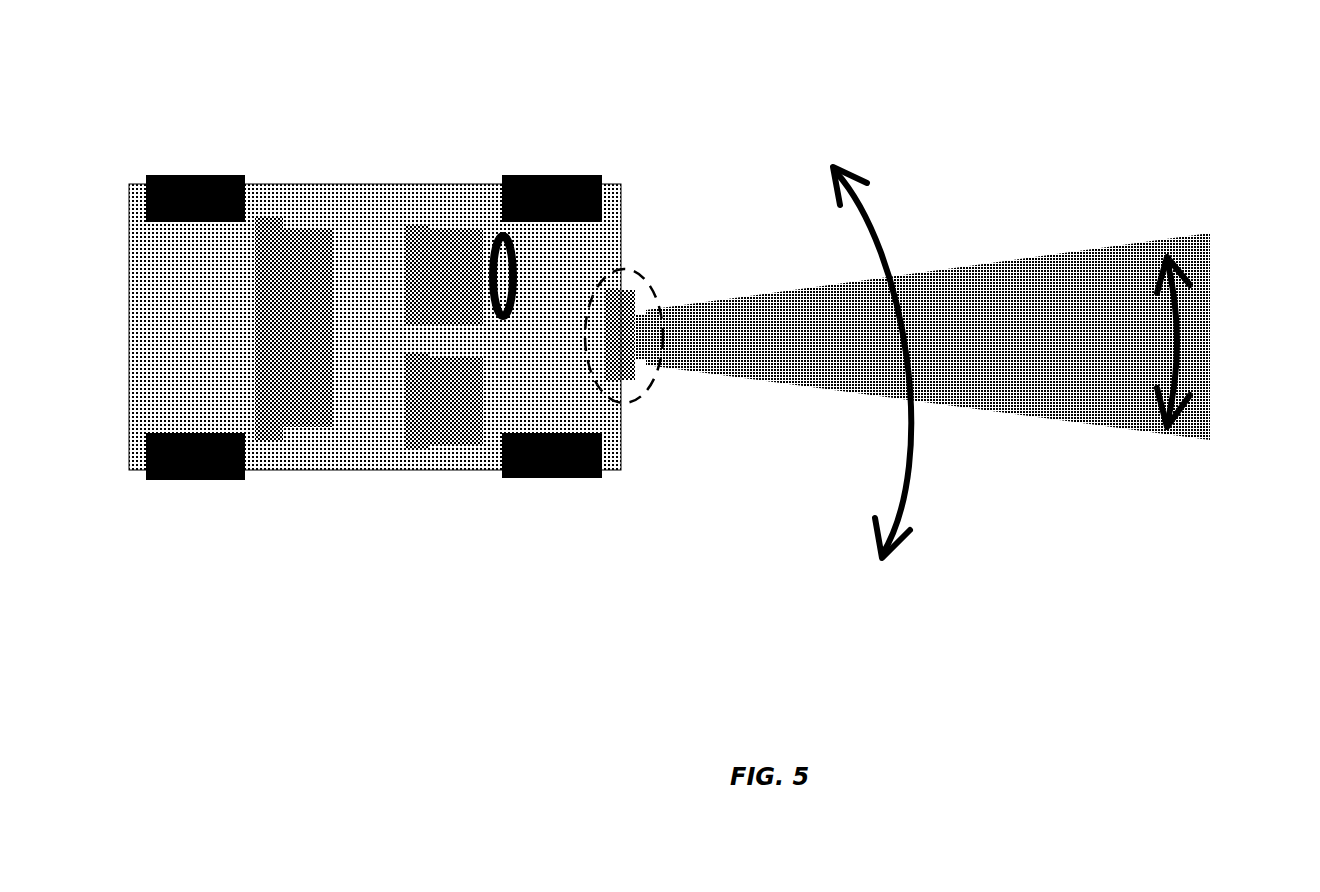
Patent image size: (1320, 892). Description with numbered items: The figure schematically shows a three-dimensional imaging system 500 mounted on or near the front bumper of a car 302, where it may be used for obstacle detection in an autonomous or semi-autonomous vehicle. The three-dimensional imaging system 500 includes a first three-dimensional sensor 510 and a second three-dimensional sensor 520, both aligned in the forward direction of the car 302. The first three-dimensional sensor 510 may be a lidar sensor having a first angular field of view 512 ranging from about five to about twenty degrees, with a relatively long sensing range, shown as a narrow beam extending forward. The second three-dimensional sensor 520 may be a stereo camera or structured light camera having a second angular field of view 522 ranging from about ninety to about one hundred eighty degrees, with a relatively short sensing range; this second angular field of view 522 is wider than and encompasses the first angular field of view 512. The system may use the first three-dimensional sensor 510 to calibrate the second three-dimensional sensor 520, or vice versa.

The car 302 is at (388, 185).
The three-dimensional imaging system 500 is at (638, 272).
The first three-dimensional sensor 510 is at (658, 350).
The second three-dimensional sensor 520 is at (617, 322).
The first angular field of view 512 is at (1182, 362).
The second angular field of view 522 is at (908, 457).